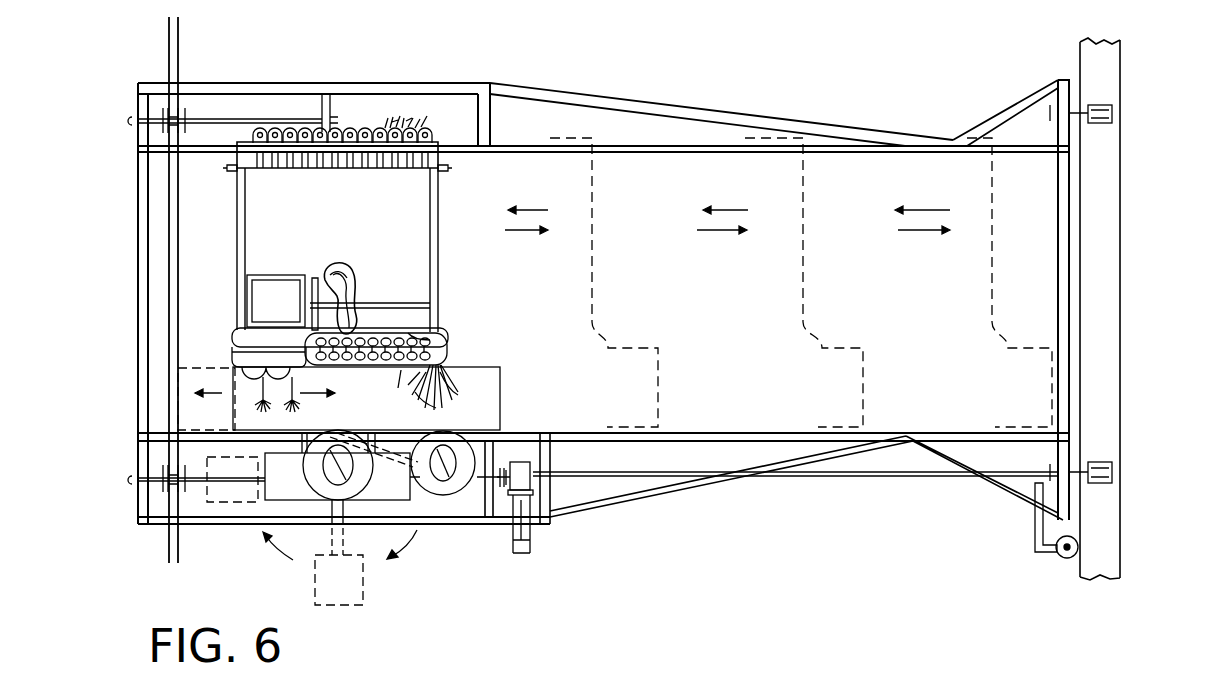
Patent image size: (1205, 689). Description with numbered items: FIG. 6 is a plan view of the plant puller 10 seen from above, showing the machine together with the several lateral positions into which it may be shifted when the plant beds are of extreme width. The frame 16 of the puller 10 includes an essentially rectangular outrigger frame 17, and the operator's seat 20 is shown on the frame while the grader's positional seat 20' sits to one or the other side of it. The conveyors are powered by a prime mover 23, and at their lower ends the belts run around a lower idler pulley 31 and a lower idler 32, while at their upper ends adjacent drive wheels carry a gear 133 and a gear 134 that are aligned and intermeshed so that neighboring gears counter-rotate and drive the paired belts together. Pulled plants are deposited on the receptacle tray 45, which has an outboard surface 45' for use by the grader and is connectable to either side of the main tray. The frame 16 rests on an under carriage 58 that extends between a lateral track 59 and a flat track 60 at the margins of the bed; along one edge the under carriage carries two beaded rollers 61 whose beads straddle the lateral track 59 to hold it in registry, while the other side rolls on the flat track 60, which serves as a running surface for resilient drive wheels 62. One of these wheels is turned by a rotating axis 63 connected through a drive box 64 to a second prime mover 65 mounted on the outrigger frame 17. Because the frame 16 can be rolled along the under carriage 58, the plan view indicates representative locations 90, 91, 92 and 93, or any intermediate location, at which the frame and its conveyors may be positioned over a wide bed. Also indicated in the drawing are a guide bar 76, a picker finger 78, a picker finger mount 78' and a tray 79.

The plant puller 10 is at (460, 266).
The frame 16 is at (241, 526).
The outrigger frame 17 is at (283, 87).
The seat 20 is at (382, 492).
The positional seat 20' is at (298, 537).
The prime mover 23 is at (298, 311).
The lower idler pulley 31 is at (390, 387).
The lower idler 32 is at (446, 353).
The receptacle tray 45 is at (347, 398).
The outboard surface 45' is at (323, 390).
The under carriage 58 is at (712, 152).
The lateral track 59 is at (180, 532).
The flat track 60 is at (1120, 311).
The beaded rollers 61 is at (185, 120).
The drive wheels 62 is at (1112, 113).
The rotating axis 63 is at (946, 478).
The drive box 64 is at (535, 478).
The second prime mover 65 is at (532, 546).
The guide bar 76 is at (340, 313).
The picker finger 78 is at (272, 286).
The picker finger mount 78' is at (253, 304).
The tray 79 is at (340, 325).
The location 90 is at (403, 112).
The location 91 is at (590, 176).
The location 92 is at (775, 168).
The location 93 is at (953, 158).
The gear 133 is at (413, 333).
The gear 134 is at (446, 333).